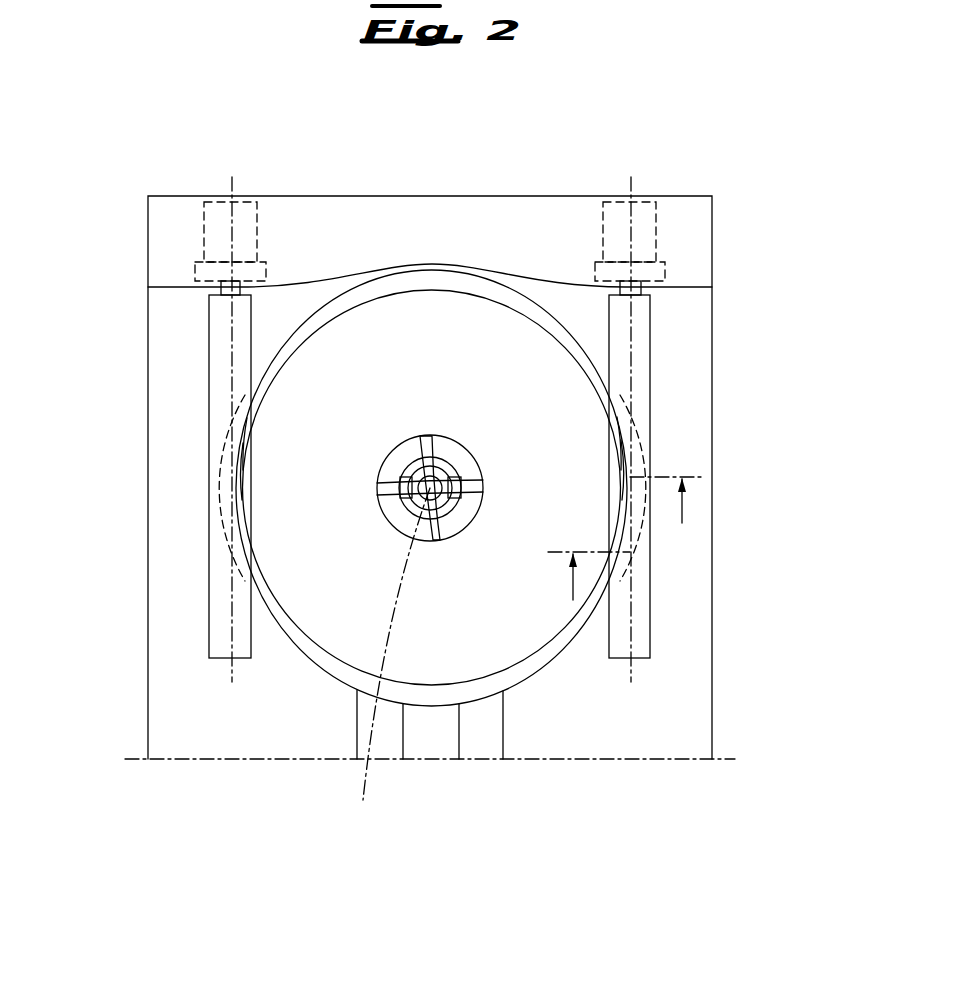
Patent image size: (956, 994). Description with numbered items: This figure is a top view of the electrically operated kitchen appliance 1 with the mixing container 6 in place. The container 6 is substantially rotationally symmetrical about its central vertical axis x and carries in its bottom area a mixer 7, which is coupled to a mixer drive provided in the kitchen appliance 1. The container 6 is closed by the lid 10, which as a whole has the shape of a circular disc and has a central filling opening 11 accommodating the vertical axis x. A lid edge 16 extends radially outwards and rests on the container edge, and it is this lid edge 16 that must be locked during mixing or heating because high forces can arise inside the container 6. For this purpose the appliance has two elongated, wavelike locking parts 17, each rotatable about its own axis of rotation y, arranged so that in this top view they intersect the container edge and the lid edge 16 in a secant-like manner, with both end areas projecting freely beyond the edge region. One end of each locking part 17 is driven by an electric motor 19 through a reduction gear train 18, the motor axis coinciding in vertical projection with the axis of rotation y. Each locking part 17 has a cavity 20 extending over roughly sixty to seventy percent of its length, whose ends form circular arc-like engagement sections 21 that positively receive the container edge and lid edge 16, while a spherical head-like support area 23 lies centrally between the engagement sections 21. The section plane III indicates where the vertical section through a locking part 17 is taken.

The kitchen appliance 1 is at (708, 182).
The mixing container 6 is at (431, 310).
The mixer 7 is at (437, 542).
The lid 10 is at (552, 404).
The filling opening 11 is at (480, 510).
The lid edge 16 is at (492, 297).
The locking part 17 is at (217, 336).
The reduction gear train 18 is at (222, 271).
The electric motor 19 is at (215, 237).
The cavity 20 is at (237, 443).
The engagement section 21 is at (242, 418).
The support area 23 is at (223, 465).
The vertical axis x is at (394, 662).
The axis of rotation y is at (431, 427).
The section III- III is at (508, 538).